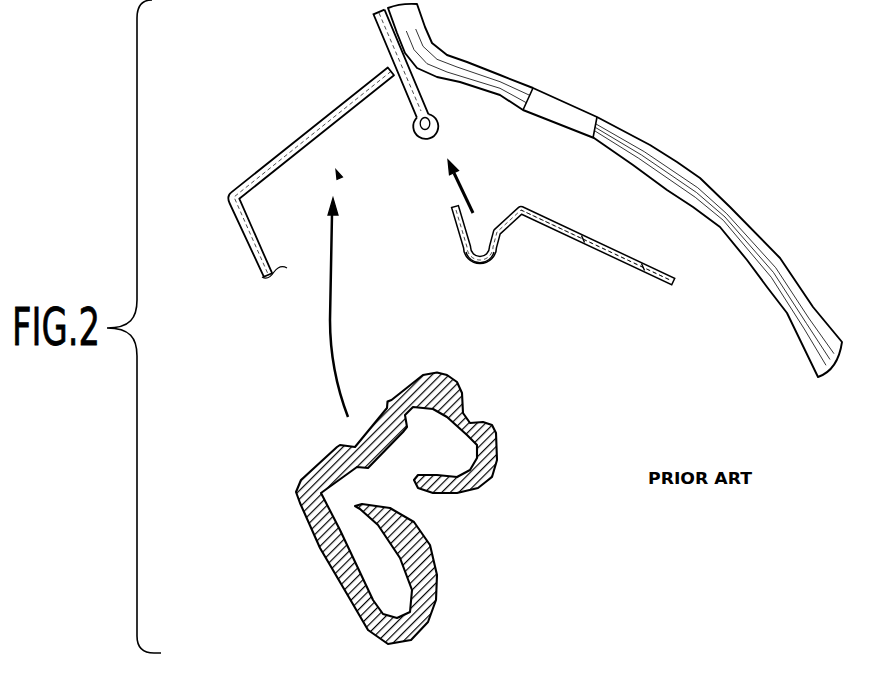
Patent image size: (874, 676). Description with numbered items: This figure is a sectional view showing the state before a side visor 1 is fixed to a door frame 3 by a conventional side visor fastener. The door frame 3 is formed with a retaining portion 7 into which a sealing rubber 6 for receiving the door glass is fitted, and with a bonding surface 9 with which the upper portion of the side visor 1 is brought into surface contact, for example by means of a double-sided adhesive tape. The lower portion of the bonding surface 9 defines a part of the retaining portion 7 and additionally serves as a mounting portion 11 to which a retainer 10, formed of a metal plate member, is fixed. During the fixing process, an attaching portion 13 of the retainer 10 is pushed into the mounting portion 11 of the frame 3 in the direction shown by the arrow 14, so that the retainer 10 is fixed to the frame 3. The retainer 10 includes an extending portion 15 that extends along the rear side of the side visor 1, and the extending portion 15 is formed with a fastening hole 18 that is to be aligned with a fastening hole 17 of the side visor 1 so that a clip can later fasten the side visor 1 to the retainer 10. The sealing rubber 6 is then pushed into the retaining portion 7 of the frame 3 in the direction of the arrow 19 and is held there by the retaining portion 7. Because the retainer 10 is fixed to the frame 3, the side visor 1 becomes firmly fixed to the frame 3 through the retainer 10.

The side visor 1 is at (677, 161).
The door frame 3 is at (293, 136).
The sealing rubber 6 is at (296, 487).
The retaining portion 7 is at (340, 178).
The bonding surface 9 is at (397, 38).
The retainer 10 is at (450, 254).
The mounting portion 11 is at (439, 131).
The attaching portion 13 is at (480, 264).
The arrow 14 is at (463, 183).
The extending portion 15 is at (559, 227).
The fastening hole 17 is at (562, 102).
The fastening hole 18 is at (606, 253).
The arrow 19 is at (330, 330).